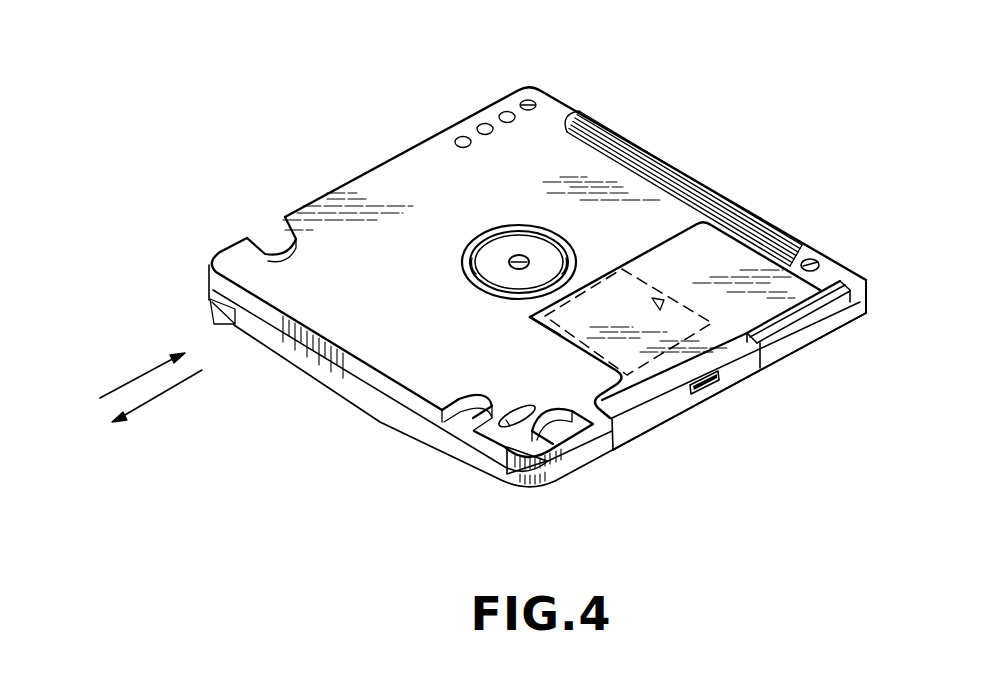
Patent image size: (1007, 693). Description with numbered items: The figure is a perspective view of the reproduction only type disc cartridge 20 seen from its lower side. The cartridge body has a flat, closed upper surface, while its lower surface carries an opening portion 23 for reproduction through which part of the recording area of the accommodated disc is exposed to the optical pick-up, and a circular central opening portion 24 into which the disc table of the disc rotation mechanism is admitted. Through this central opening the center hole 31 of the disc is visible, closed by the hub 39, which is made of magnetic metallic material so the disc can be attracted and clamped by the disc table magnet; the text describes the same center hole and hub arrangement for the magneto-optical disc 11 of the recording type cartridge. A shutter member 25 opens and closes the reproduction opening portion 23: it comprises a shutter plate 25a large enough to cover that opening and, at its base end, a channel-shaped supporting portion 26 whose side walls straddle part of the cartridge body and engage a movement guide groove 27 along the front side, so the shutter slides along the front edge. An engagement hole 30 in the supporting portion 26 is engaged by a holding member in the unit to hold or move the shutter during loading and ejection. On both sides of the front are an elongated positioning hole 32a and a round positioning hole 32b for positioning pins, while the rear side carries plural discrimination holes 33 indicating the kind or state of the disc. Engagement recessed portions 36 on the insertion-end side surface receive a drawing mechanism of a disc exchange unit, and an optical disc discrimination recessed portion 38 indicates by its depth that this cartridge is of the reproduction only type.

The disc cartridge 20 is at (722, 172).
The magneto-optical disc 11 is at (477, 278).
The opening portion for reproduction 23 is at (663, 302).
The circular central opening portion 24 is at (560, 247).
The shutter member 25 is at (649, 372).
The shutter plate 25a is at (528, 320).
The supporting portion 26 is at (636, 421).
The movement guide groove 27 is at (775, 350).
The engagement hole 30 is at (708, 392).
The center hole 31 is at (477, 258).
The positioning hole 32a is at (500, 432).
The positioning hole 32b is at (818, 262).
The discrimination holes 33 is at (481, 110).
The engagement recessed portion 36 is at (252, 236).
The optical disc discrimination recessed portion 38 is at (462, 432).
The hub 39 is at (519, 256).